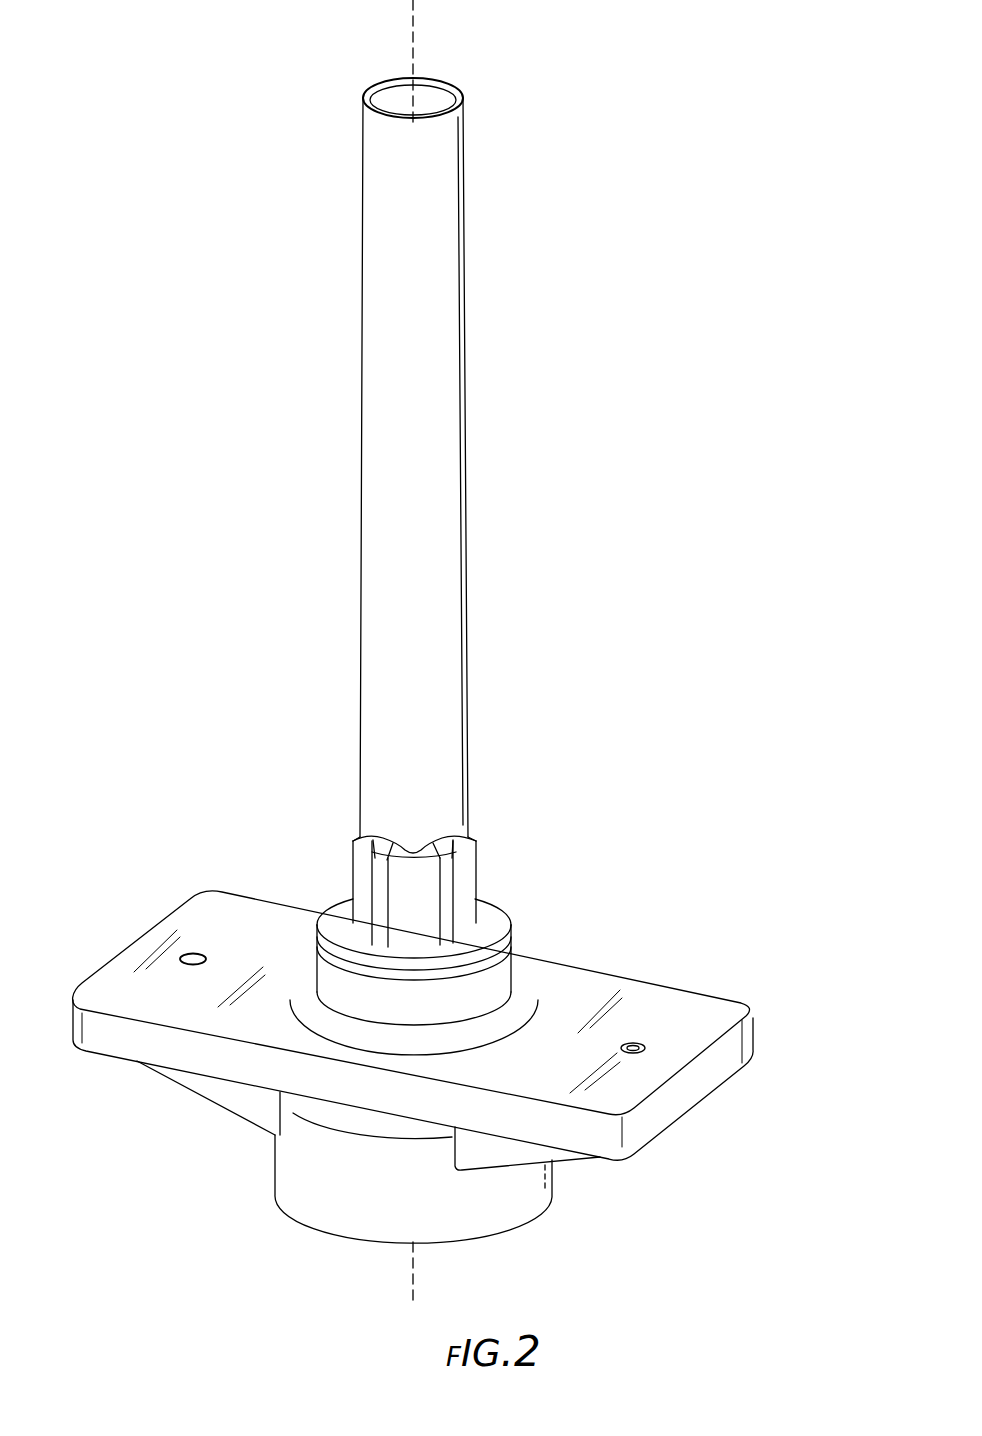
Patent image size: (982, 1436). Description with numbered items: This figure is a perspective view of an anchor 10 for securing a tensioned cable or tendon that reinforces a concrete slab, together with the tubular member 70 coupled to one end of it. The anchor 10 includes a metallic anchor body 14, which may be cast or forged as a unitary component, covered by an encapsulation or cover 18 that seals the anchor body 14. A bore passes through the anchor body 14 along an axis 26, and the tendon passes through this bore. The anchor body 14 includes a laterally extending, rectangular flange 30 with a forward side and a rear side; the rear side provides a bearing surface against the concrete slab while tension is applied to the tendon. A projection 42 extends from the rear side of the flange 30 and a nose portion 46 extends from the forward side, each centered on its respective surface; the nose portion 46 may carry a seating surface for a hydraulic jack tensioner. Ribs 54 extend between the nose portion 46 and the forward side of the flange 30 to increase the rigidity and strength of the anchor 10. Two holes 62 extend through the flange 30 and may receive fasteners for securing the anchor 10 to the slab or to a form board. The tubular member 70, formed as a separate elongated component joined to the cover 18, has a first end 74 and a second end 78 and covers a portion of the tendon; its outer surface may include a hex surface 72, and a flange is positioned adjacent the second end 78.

The anchor 10 is at (730, 440).
The anchor body 14 is at (497, 1187).
The cover 18 is at (653, 870).
The axis 26 is at (410, 48).
The flange 30 is at (706, 978).
The projection 42 is at (492, 982).
The nose portion 46 is at (305, 1157).
The ribs 54 is at (220, 1090).
The holes 62 is at (193, 952).
The tubular member 70 is at (456, 808).
The hex surface 72 is at (348, 855).
The first end 74 is at (462, 90).
The second end 78 is at (315, 965).